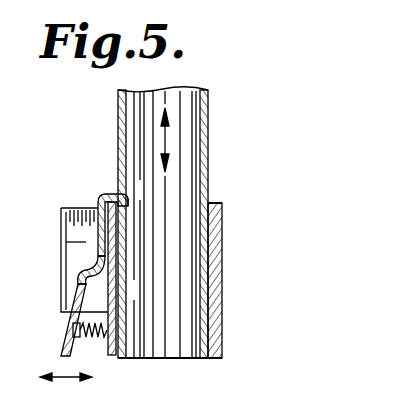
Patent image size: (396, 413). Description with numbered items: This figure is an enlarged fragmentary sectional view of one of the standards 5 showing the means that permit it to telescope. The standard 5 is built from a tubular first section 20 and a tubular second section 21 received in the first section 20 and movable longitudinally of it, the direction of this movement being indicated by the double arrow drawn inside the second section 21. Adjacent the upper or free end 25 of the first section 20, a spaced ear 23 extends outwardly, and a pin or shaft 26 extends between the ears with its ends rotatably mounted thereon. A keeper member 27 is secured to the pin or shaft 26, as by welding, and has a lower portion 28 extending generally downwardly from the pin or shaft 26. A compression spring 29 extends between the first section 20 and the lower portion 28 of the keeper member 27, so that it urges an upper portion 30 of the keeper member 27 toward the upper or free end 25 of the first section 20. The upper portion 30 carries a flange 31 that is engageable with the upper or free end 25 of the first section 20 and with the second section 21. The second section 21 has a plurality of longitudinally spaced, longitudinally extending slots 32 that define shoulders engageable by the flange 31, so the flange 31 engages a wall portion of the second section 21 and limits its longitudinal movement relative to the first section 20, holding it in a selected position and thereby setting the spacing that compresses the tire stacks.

The standard 5 is at (117, 108).
The tubular first section 20 is at (222, 262).
The tubular second section 21 is at (176, 128).
The ear 23 is at (61, 208).
The upper or free end 25 is at (216, 205).
The pin or shaft 26 is at (80, 292).
The keeper member 27 is at (84, 243).
The lower portion 28 is at (72, 330).
The compression spring 29 is at (96, 338).
The upper portion 30 is at (108, 196).
The flange 31 is at (122, 200).
The slot 32 is at (124, 193).